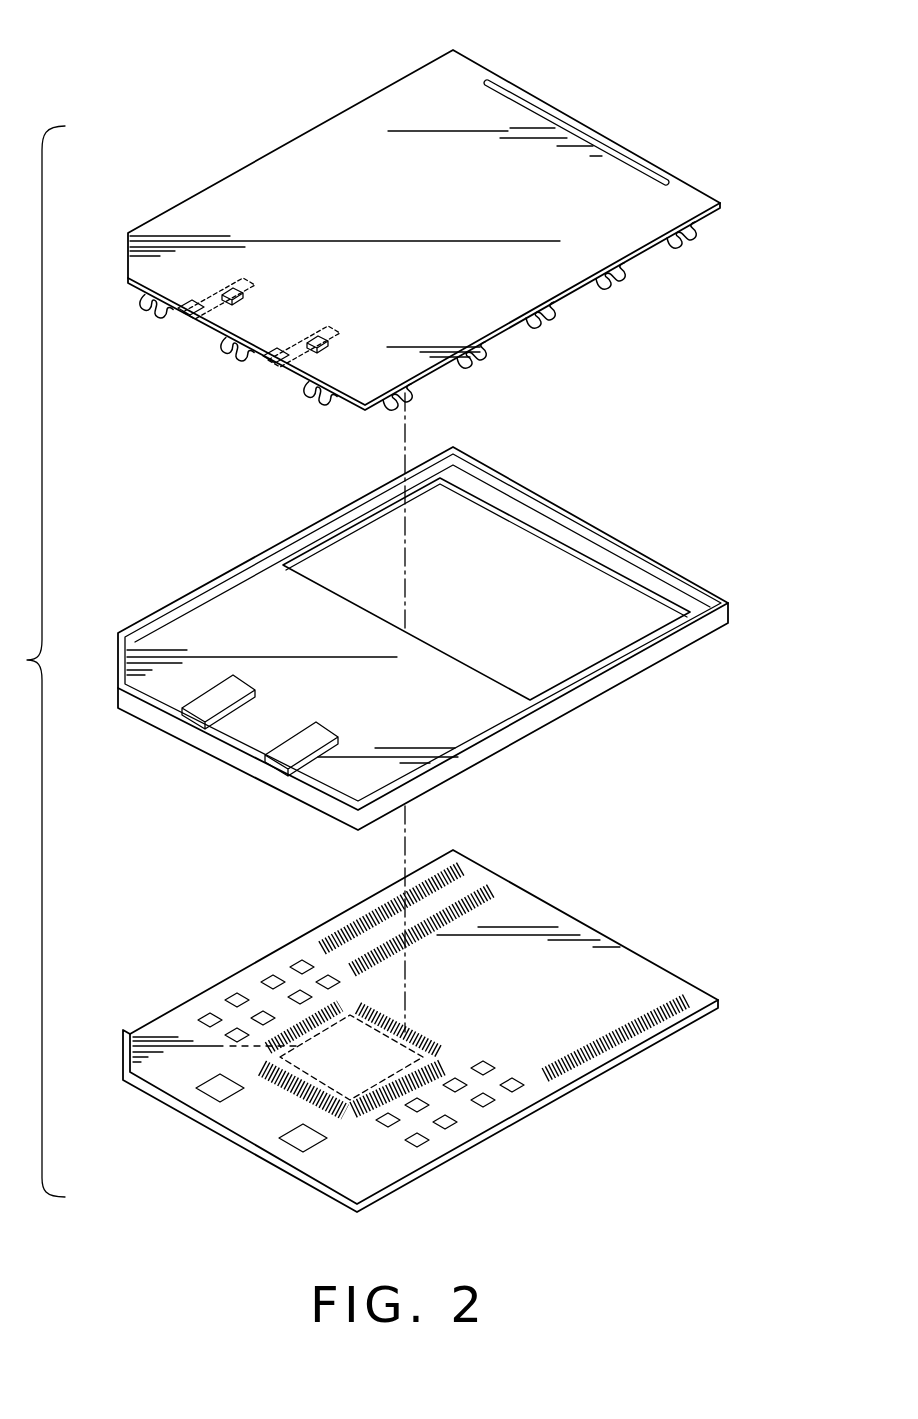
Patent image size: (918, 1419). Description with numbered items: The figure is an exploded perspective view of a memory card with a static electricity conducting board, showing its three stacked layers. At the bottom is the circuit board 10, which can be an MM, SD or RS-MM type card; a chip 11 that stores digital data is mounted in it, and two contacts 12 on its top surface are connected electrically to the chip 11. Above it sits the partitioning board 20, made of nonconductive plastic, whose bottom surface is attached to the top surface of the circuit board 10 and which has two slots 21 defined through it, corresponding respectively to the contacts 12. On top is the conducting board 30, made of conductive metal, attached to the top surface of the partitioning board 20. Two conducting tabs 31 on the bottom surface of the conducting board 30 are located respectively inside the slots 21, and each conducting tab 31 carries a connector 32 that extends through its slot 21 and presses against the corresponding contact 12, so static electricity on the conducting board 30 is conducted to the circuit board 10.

The circuit board 10 is at (620, 918).
The chip 11 is at (410, 1036).
The contacts 12 is at (303, 1138).
The partitioning board 20 is at (630, 543).
The slots 21 is at (332, 722).
The conducting board 30 is at (352, 118).
The conducting tabs 31 is at (320, 343).
The connectors 32 is at (320, 360).